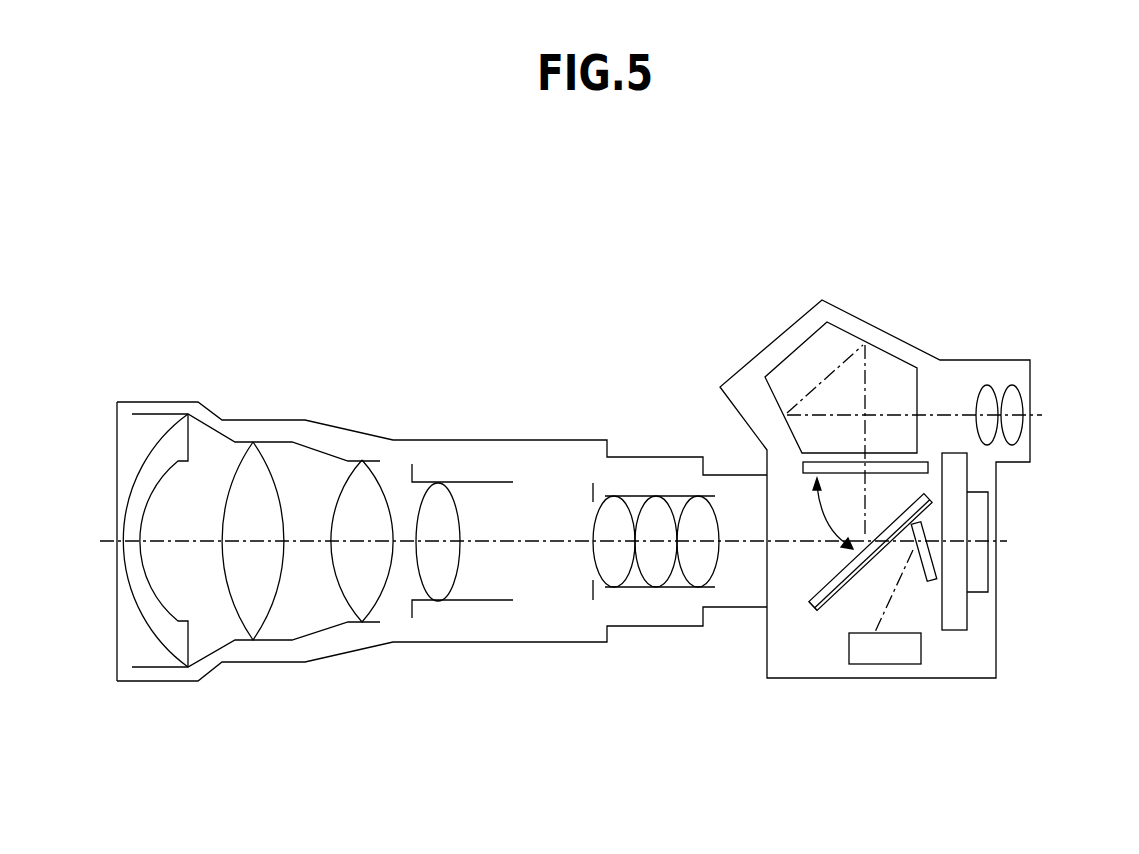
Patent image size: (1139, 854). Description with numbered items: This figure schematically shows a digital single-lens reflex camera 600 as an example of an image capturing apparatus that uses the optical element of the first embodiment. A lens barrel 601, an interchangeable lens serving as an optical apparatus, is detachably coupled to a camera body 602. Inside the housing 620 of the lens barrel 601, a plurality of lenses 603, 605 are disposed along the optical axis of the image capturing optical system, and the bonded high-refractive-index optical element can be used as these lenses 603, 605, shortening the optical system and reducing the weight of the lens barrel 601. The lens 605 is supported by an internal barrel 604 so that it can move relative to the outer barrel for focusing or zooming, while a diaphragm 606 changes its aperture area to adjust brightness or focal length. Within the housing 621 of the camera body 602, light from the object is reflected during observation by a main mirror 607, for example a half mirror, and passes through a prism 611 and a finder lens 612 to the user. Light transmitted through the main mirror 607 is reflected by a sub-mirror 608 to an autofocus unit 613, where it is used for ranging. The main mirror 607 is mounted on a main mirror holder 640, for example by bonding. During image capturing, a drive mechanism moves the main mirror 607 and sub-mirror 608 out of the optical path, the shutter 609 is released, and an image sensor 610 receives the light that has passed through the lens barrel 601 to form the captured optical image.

The digital single-lens reflex camera 600 is at (673, 168).
The lens barrel 601 is at (731, 257).
The camera body 602 is at (1030, 257).
The lens 603 is at (199, 418).
The housing 620 is at (338, 427).
The internal barrel 604 is at (450, 482).
The lens 605 is at (440, 578).
The diaphragm 606 is at (592, 487).
The housing 621 is at (770, 343).
The prism 611 is at (893, 373).
The finder lens 612 is at (1009, 383).
The main mirror 607 is at (808, 599).
The main mirror holder 640 is at (823, 608).
The sub-mirror 608 is at (923, 548).
The shutter 609 is at (957, 615).
The image sensor 610 is at (977, 577).
The autofocus (AF) unit 613 is at (875, 665).